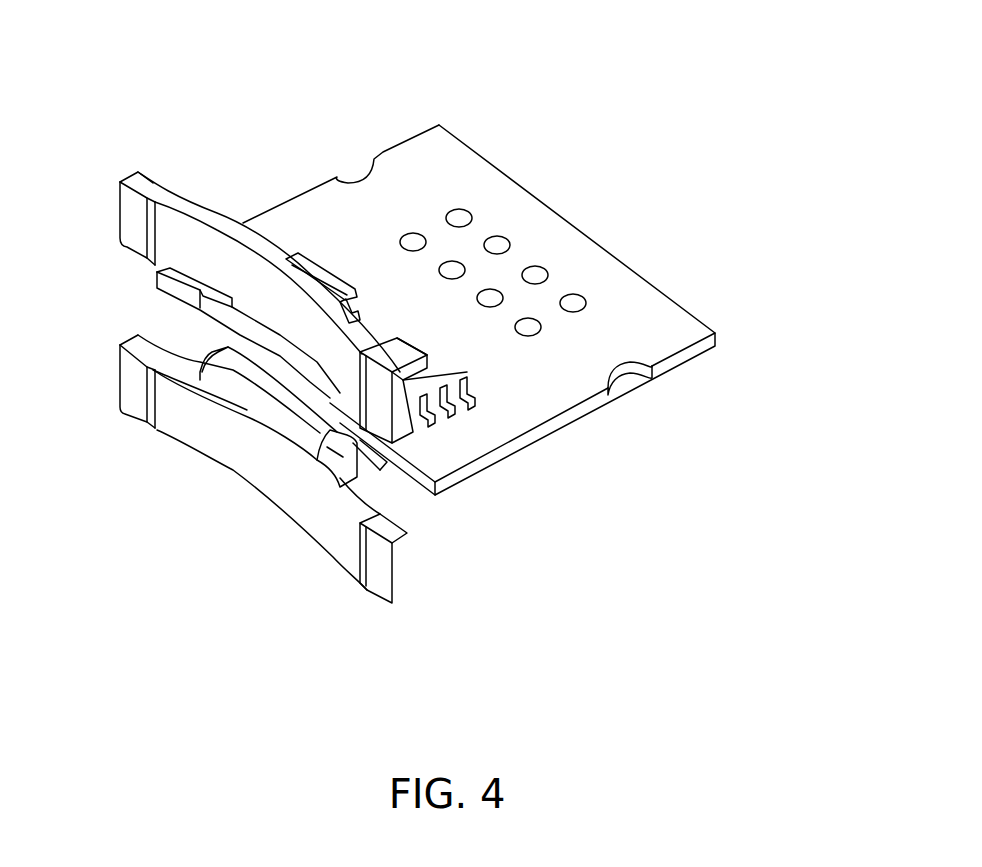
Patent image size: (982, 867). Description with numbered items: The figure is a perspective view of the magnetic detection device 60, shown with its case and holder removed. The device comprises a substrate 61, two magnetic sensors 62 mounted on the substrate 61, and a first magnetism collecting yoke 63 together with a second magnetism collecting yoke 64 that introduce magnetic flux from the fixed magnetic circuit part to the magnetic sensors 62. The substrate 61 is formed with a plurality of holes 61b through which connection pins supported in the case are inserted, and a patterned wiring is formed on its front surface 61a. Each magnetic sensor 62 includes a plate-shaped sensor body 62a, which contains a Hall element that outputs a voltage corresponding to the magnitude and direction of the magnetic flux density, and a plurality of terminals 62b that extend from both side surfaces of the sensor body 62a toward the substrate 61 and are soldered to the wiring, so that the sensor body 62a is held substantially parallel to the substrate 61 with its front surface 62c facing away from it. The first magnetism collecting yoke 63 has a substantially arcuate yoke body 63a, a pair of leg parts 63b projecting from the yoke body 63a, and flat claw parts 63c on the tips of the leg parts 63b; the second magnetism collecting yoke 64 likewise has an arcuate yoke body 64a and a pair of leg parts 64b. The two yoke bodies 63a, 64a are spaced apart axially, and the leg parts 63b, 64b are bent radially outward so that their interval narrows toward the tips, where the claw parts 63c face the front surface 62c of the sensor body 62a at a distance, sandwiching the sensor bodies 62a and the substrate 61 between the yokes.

The magnetic detection device 60 is at (707, 150).
The substrate 61 is at (439, 125).
The front surface 61a is at (447, 157).
The holes 61b is at (498, 248).
The magnetic sensor 62 is at (370, 338).
The sensor body 62a is at (433, 392).
The terminals 62b is at (470, 390).
The front surface 62c is at (430, 353).
The first magnetism collecting yoke 63 is at (138, 172).
The yoke body 63a is at (200, 247).
The leg parts 63b is at (203, 292).
The claw parts 63c is at (403, 345).
The second magnetism collecting yoke 64 is at (388, 606).
The yoke body 64a is at (340, 540).
The leg parts 64b is at (205, 372).